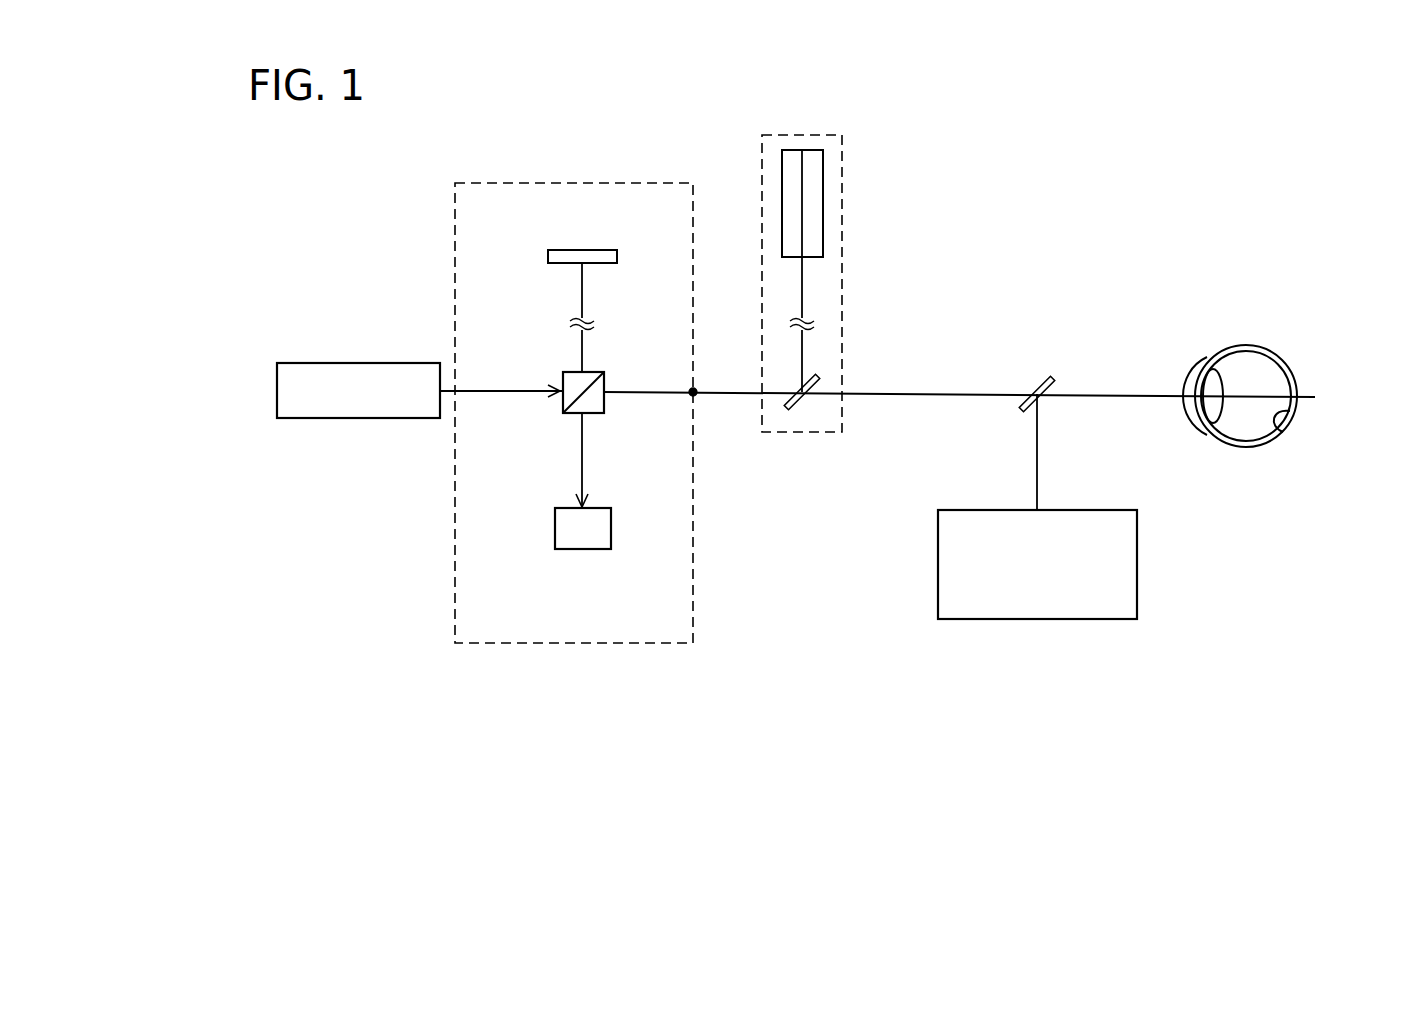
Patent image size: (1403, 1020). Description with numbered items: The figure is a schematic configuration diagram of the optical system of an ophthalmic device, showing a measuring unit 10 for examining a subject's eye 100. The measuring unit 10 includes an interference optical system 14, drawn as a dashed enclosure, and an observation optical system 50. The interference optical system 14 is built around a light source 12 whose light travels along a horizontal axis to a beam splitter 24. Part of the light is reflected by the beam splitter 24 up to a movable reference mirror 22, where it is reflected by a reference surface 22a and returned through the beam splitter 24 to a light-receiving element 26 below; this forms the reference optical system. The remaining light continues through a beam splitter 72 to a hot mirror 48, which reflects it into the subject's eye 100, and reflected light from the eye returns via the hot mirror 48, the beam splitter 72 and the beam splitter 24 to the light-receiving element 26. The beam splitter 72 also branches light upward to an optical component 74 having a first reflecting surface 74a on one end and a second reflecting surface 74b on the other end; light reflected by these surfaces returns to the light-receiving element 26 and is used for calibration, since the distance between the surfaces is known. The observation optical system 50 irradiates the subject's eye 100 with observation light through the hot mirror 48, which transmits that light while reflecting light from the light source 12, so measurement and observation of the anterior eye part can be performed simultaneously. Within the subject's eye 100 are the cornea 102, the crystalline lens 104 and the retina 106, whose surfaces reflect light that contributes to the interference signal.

The measuring unit 10 is at (1008, 136).
The light source 12 is at (377, 363).
The interference optical system 14 is at (998, 238).
The reference mirror 22 is at (596, 248).
The reference surface 22a is at (565, 264).
The beam splitter 24 is at (608, 380).
The light-receiving element 26 is at (582, 549).
The hot mirror 48 is at (1036, 378).
The observation optical system 50 is at (1037, 620).
The beam splitter 72 is at (806, 406).
The optical component 74 is at (826, 203).
The first reflecting surface 74a is at (815, 259).
The second reflecting surface 74b is at (818, 156).
The subject's eye 100 is at (1251, 346).
The cornea 102 is at (1188, 408).
The crystalline lens 104 is at (1202, 428).
The retina 106 is at (1273, 432).